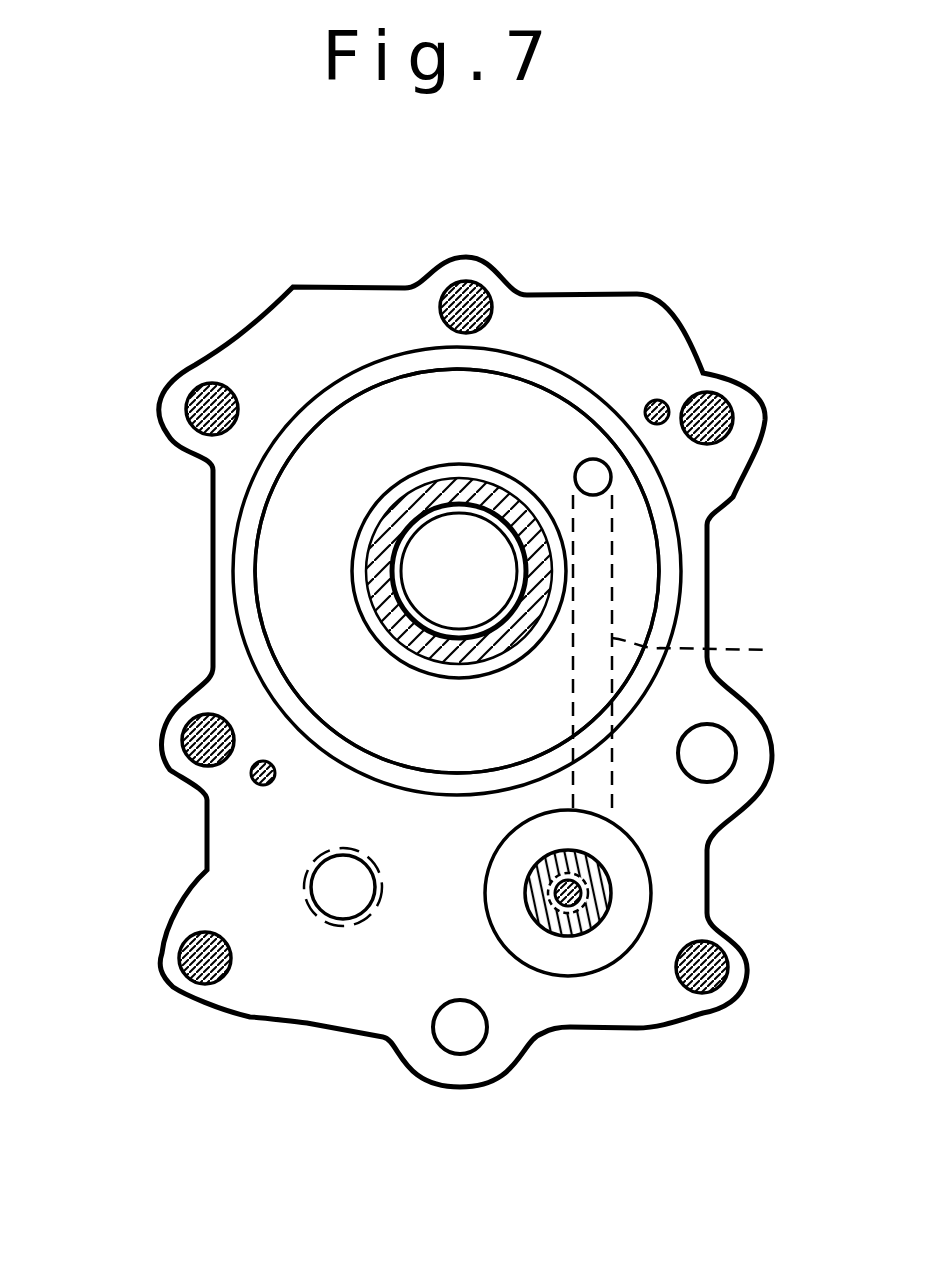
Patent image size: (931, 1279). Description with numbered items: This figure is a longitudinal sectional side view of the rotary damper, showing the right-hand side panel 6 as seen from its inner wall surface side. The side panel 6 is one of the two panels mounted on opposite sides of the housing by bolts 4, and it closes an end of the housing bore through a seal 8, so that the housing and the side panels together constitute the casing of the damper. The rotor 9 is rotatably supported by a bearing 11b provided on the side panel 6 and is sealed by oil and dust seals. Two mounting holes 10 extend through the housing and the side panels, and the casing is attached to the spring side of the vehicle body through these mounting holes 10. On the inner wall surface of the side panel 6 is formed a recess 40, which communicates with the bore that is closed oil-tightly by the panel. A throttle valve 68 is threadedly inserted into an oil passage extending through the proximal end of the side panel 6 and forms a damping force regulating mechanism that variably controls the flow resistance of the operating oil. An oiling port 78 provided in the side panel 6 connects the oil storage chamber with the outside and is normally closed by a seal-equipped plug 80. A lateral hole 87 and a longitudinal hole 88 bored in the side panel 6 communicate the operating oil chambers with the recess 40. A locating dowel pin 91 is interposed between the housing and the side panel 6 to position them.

The bolts 4 is at (442, 292).
The right side panel 6 is at (612, 322).
The seal 8 is at (247, 575).
The rotor 9 is at (449, 577).
The mounting holes 10 is at (727, 753).
The bearing 11b is at (457, 571).
The recess 40 is at (590, 974).
The throttle valve 68 is at (568, 893).
The oiling port 78 is at (327, 918).
The plug 80 is at (325, 885).
The lateral hole 87 is at (593, 477).
The longitudinal hole 88 is at (675, 653).
The locating dowel pin 91 is at (665, 405).